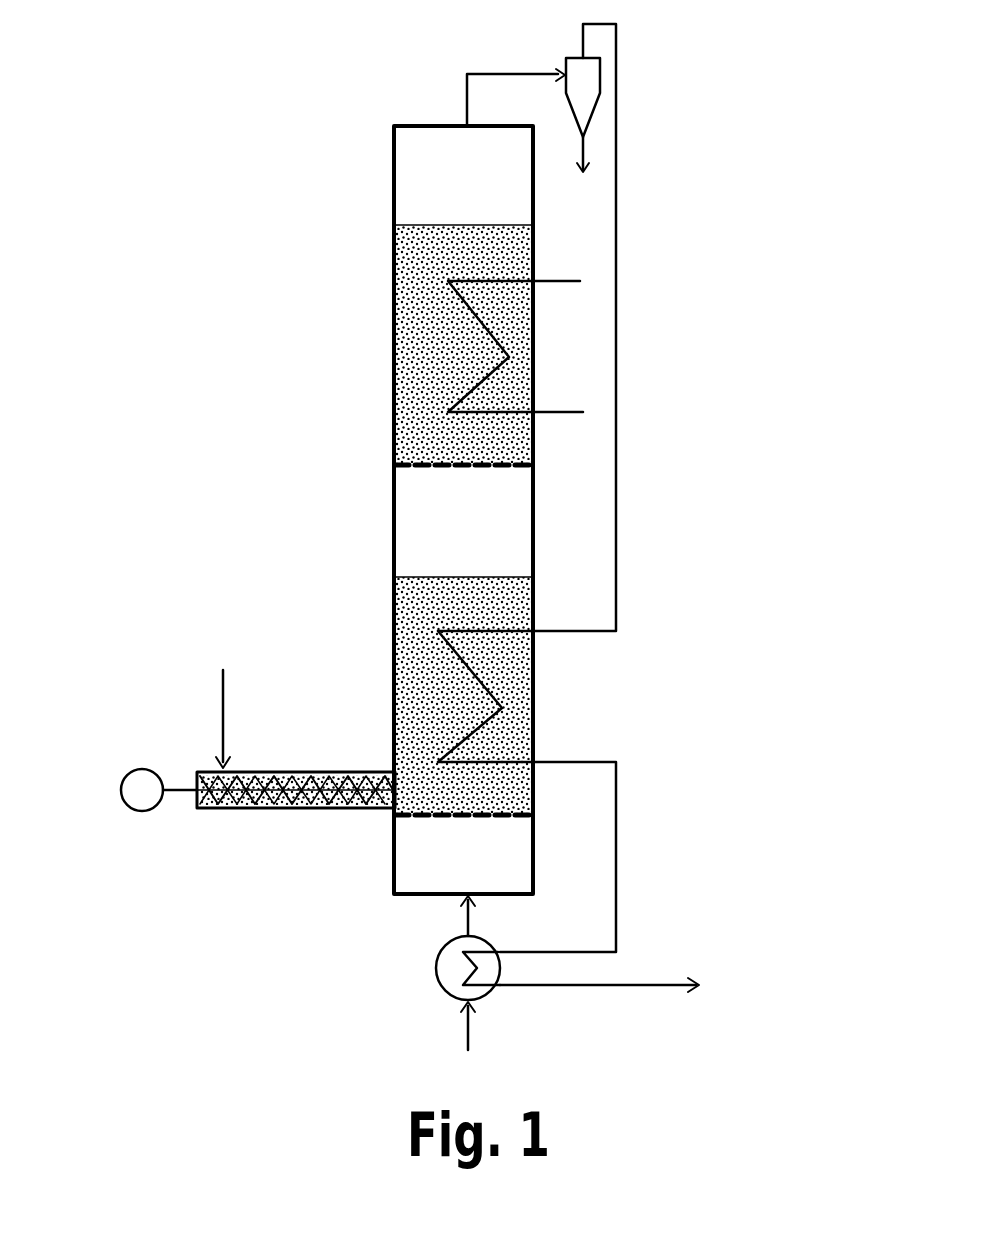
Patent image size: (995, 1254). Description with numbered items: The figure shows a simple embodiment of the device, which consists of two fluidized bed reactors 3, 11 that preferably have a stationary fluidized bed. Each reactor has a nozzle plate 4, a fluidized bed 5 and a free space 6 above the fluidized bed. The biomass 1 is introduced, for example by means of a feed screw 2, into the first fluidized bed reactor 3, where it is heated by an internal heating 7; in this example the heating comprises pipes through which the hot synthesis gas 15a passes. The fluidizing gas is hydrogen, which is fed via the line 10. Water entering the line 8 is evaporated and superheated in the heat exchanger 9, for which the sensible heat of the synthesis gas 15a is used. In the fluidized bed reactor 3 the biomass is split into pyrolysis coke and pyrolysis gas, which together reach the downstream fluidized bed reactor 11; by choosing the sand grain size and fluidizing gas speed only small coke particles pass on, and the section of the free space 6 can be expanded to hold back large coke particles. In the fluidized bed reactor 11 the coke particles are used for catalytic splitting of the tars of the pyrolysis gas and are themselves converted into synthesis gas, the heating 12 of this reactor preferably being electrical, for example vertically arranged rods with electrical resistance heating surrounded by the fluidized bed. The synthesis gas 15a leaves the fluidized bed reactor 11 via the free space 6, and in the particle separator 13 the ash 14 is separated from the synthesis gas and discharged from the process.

The biomass 1 is at (233, 719).
The feed screw 2 is at (320, 773).
The fluidized bed reactor 3 is at (613, 720).
The nozzle plate 4 is at (465, 468).
The fluidized bed 5 is at (425, 375).
The free space 6 is at (427, 193).
The internal heating 7 is at (473, 633).
The line 8 is at (454, 1026).
The heat exchanger 9 is at (452, 980).
The line 10 is at (462, 917).
The fluidized bed reactor 11 is at (645, 363).
The heating 12 is at (492, 282).
The particle separator 13 is at (582, 67).
The ash 14 is at (580, 177).
The synthesis gas 15a is at (628, 985).